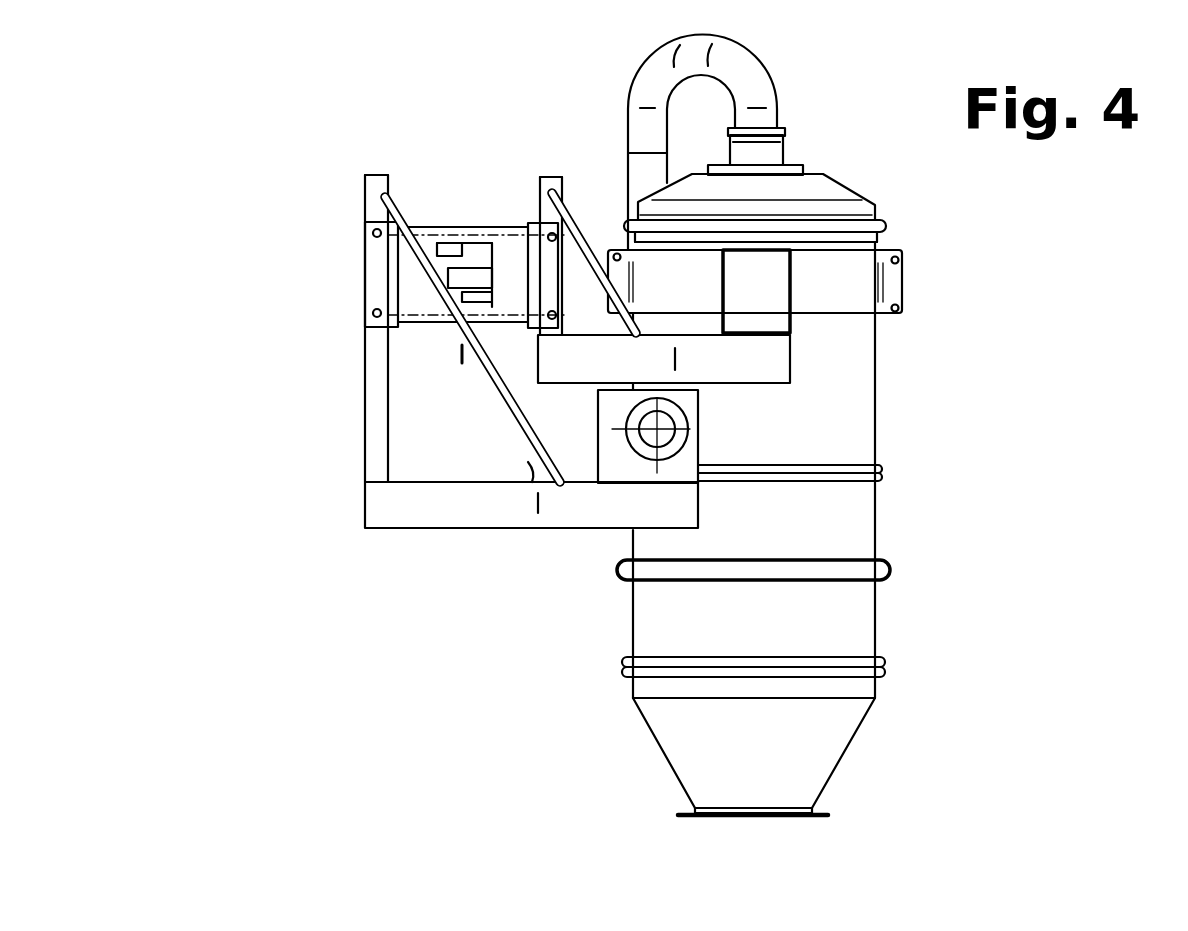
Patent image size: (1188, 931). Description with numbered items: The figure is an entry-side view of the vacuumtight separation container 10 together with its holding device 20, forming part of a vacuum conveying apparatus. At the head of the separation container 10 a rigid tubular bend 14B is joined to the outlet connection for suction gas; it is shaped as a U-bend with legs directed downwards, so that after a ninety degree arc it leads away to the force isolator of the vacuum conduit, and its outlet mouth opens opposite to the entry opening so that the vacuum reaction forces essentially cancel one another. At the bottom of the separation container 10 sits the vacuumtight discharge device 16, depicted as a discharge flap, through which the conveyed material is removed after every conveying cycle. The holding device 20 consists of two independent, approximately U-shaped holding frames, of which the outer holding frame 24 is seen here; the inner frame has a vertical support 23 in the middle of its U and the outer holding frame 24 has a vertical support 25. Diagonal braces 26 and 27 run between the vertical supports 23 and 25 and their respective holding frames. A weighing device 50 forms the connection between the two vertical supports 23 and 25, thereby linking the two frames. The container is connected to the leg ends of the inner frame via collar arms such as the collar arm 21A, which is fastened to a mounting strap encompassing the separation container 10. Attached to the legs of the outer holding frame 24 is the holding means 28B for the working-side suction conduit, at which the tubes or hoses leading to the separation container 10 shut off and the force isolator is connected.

The separation container 10 is at (920, 436).
The tubular bend 14B is at (777, 82).
The discharge device 16 is at (760, 818).
The holding device 20 is at (252, 417).
The collar arm 21A is at (790, 322).
The vertical support 23 is at (563, 179).
The holding frame 24 is at (375, 530).
The vertical support 25 is at (388, 184).
The diagonal brace 26 is at (568, 221).
The diagonal brace 27 is at (532, 462).
The holding means 28B is at (702, 444).
The weighing device 50 is at (463, 227).